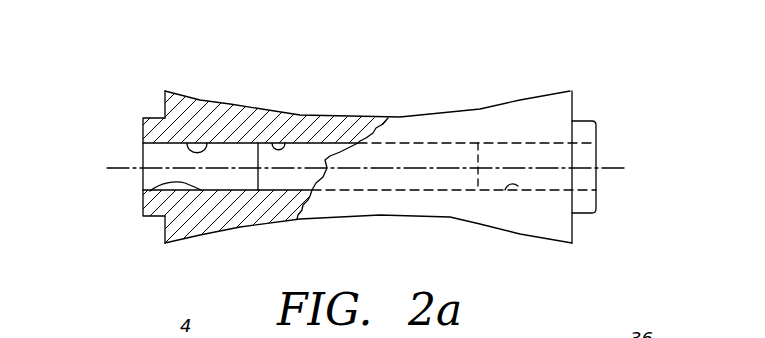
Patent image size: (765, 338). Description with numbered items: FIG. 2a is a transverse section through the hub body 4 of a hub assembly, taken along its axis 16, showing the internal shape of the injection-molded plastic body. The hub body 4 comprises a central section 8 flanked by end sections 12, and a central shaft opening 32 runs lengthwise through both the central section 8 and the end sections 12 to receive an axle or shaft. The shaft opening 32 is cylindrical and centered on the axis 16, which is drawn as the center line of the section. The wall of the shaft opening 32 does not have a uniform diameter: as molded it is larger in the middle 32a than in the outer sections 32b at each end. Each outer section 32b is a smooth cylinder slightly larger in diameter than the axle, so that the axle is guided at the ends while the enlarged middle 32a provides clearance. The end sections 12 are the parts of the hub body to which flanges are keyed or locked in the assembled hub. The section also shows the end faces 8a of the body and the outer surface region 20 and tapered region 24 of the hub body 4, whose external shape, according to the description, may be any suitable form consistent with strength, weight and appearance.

The hub body 4 is at (430, 106).
The central section 8 is at (322, 115).
The end face 8a is at (167, 91).
The end section 12 is at (158, 106).
The axis 16 is at (122, 163).
The bore 20 is at (400, 130).
The tapered section 24 is at (468, 108).
The central shaft opening 32 is at (208, 143).
The middle of shaft opening 32a is at (283, 143).
The outer section of shaft opening 32b is at (150, 191).